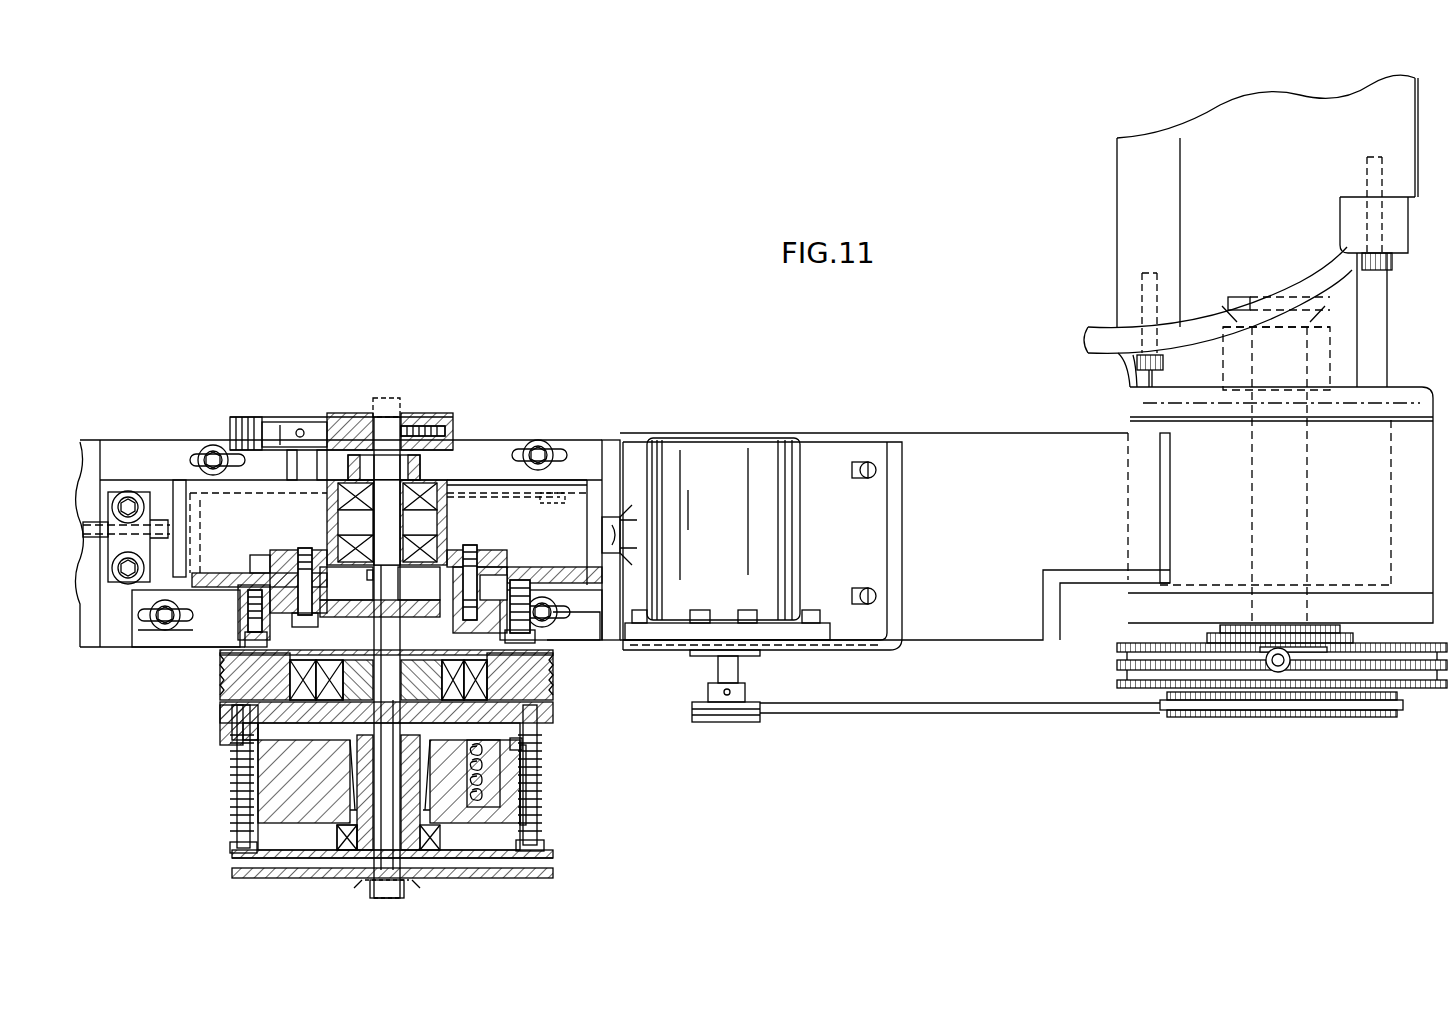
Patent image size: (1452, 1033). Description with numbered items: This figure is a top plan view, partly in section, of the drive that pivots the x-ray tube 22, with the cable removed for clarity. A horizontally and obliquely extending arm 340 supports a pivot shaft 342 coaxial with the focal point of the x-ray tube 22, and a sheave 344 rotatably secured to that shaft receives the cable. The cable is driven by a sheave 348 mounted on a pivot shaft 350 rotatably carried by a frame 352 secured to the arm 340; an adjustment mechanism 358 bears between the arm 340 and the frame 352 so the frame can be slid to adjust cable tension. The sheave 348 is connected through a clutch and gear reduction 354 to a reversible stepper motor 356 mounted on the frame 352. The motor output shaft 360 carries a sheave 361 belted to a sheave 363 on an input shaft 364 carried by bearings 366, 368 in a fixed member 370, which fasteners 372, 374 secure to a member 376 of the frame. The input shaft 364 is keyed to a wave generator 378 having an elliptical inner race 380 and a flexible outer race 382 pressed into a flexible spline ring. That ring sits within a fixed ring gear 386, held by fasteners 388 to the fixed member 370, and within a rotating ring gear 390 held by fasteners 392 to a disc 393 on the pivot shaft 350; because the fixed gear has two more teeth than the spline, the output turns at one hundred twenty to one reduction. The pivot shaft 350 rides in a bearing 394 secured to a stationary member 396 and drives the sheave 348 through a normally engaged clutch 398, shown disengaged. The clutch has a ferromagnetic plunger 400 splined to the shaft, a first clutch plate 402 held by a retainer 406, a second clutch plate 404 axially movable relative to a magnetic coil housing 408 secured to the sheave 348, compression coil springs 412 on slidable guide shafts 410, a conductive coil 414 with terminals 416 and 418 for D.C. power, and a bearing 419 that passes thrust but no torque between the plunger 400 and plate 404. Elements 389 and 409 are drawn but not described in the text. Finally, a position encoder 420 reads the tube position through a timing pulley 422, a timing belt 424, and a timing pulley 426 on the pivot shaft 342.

The x-ray tube 22 is at (1238, 118).
The arm 340 is at (1018, 450).
The pivot shaft 342 is at (1290, 490).
The sheave 344 is at (1445, 643).
The sheave 348 is at (555, 684).
The pivot shaft 350 is at (222, 693).
The frame 352 is at (578, 478).
The clutch and gear reduction 354 is at (225, 660).
The reversible stepper motor 356 is at (244, 529).
The adjustment mechanism 358 is at (148, 500).
The output shaft 360 is at (280, 455).
The sheave 361 is at (292, 420).
The sheave 363 is at (405, 448).
The input shaft 364 is at (385, 412).
The bearing 366 is at (440, 500).
The bearing 368 is at (450, 510).
The fixed member 370 is at (510, 480).
The fastener 372 is at (520, 555).
The fastener 374 is at (252, 572).
The member 376 is at (548, 577).
The wave generator 378 is at (427, 592).
The elliptical inner race 380 is at (300, 575).
The flexible outer race 382 is at (445, 550).
The fixed ring gear 386 is at (530, 594).
The fasteners 388 is at (260, 590).
The screw 389 is at (478, 575).
The rotating ring gear 390 is at (534, 634).
The fasteners 392 is at (250, 622).
The disc 393 is at (352, 616).
The bearing 394 is at (545, 695).
The stationary member 396 is at (545, 668).
The clutch 398 is at (575, 780).
The ferromagnetic plunger 400 is at (235, 725).
The first clutch plate 402 is at (525, 870).
The second clutch plate 404 is at (240, 855).
The retainer 406 is at (385, 898).
The magnetic coil housing 408 is at (235, 735).
The plate edge 409 is at (540, 868).
The slidable guide shafts 410 is at (237, 812).
The compression coil springs 412 is at (237, 785).
The conductive coil 414 is at (545, 750).
The terminal 416 is at (490, 745).
The terminal 418 is at (545, 805).
The bearing 419 is at (347, 852).
The position encoder 420 is at (755, 450).
The timing pulley 422 is at (745, 725).
The timing belt 424 is at (955, 702).
The timing pulley 426 is at (1290, 720).